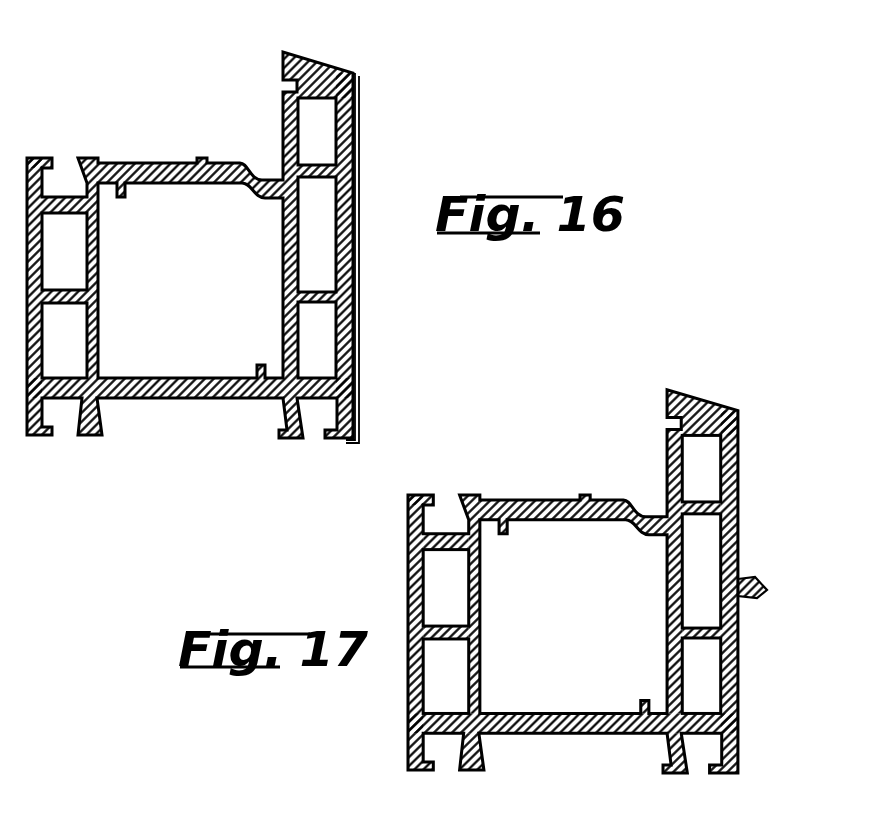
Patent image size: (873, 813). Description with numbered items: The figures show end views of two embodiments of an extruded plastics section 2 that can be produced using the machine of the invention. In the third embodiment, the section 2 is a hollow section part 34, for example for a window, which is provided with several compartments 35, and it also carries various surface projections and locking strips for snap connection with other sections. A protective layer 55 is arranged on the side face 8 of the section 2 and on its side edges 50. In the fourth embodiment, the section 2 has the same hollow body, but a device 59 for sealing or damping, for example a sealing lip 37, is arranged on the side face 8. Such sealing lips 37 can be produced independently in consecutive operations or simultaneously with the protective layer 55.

In FIG. 16, the section 2 is at (257, 266).
In FIG. 17, the section 2 is at (767, 441).
In FIG. 16, the side face 8 is at (360, 235).
In FIG. 16, the hollow section part 34 is at (187, 398).
In FIG. 16, the compartments 35 is at (163, 200).
In FIG. 16, the side edges 50 is at (322, 72).
In FIG. 16, the protective layer 55 is at (362, 153).
In FIG. 17, the sealing lip 37 is at (757, 597).
In FIG. 17, the device for sealing or damping 59 is at (785, 587).